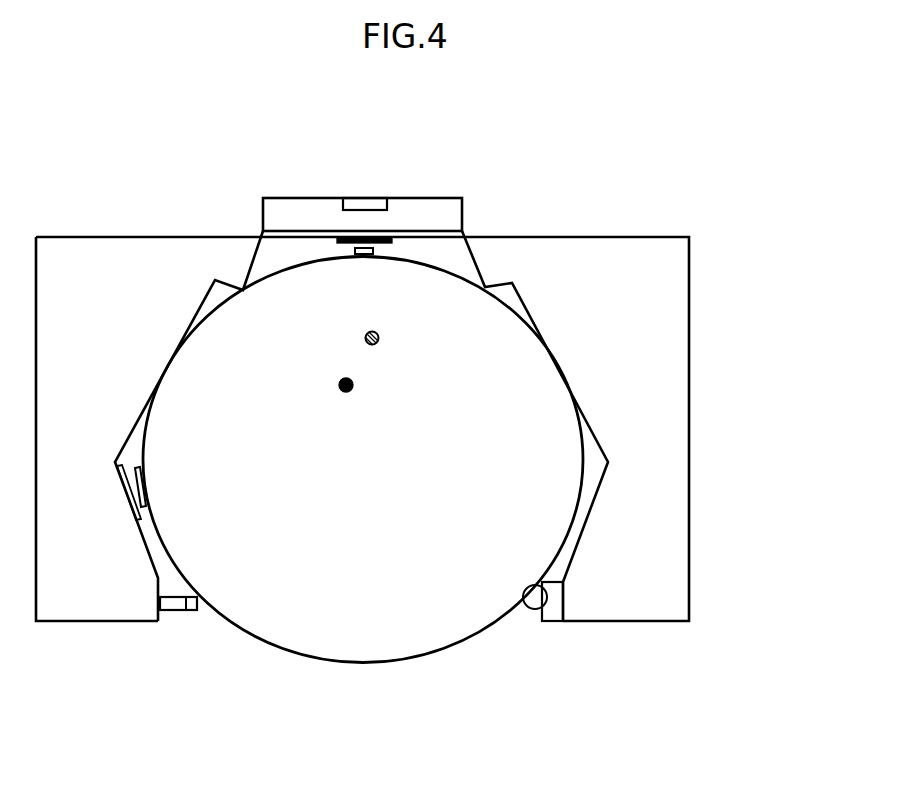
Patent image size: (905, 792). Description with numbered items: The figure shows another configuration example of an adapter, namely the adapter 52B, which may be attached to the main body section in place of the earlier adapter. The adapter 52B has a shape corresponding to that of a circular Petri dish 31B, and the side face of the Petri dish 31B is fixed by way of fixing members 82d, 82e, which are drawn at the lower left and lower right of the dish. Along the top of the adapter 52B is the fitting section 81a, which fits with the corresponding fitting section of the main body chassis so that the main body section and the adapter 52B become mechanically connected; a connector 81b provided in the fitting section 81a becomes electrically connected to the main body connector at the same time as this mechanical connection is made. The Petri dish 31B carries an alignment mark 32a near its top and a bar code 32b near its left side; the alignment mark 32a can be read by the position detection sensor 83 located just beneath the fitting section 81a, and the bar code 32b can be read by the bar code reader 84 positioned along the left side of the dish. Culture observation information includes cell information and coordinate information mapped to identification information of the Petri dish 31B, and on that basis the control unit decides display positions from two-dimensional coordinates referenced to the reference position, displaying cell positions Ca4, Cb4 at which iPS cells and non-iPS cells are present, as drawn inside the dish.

The adapter 52B is at (672, 271).
The Petri dish 31B is at (361, 664).
The fitting section 81a is at (286, 203).
The connector 81b is at (363, 203).
The position detection sensor 83 is at (340, 240).
The alignment mark 32a is at (364, 257).
The bar code 32b is at (146, 489).
The cell position Ca4 is at (378, 343).
The cell position Cb4 is at (352, 392).
The bar code reader 84 is at (130, 500).
The fixing member 82d is at (172, 612).
The fixing member 82e is at (545, 598).